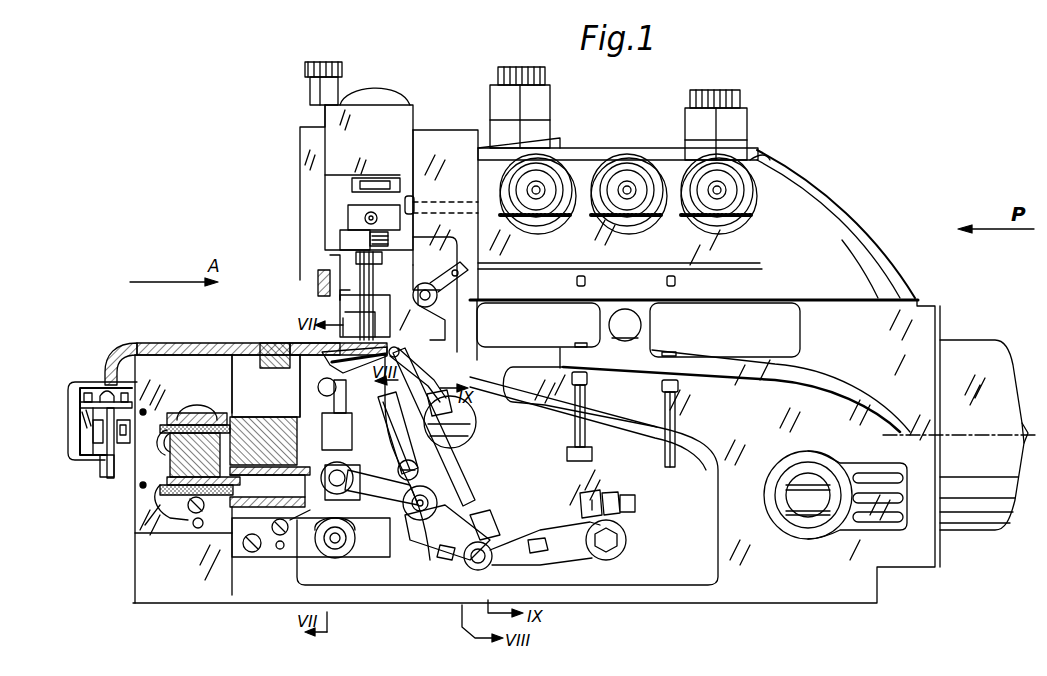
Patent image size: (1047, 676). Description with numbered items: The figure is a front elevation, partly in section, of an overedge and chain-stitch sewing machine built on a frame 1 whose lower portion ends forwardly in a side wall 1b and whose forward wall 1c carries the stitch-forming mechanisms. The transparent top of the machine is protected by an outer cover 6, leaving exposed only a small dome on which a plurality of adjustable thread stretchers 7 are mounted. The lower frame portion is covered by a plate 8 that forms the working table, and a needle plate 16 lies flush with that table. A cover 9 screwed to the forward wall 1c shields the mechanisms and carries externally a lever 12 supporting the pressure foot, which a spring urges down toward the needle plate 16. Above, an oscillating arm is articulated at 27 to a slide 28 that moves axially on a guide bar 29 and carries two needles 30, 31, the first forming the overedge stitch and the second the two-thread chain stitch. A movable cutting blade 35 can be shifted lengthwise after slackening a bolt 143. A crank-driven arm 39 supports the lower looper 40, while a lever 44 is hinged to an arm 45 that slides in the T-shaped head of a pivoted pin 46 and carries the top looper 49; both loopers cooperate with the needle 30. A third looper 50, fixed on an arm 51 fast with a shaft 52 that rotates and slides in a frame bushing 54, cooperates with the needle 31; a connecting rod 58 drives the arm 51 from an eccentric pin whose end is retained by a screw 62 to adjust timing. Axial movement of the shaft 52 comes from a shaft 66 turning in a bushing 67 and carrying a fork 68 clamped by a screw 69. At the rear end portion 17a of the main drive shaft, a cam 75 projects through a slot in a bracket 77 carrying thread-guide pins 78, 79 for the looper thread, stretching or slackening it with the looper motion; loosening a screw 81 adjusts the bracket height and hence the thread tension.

The frame 1 is at (937, 315).
The side wall 1b is at (143, 502).
The forward wall 1c is at (437, 142).
The outer cover 6 is at (853, 223).
The adjustable thread stretchers 7 is at (545, 180).
The plate 8 is at (172, 345).
The cover 9 is at (343, 140).
The lever 12 is at (320, 268).
The needle plate 16 is at (286, 345).
The rear end portion 17a is at (90, 435).
The articulation 27 is at (352, 222).
The slide 28 is at (385, 212).
The guide bar 29 is at (366, 195).
The needle 30 is at (390, 316).
The needle 31 is at (343, 310).
The cutting blade 35 is at (458, 268).
The arm 39 is at (393, 430).
The lower looper 40 is at (322, 385).
The lever 44 is at (578, 553).
The arm 45 is at (470, 507).
The pin 46 is at (472, 421).
The top looper 49 is at (404, 367).
The third looper 50 is at (340, 368).
The arm 51 is at (330, 415).
The shaft 52 is at (337, 545).
The bushing 54 is at (340, 540).
The connecting rod 58 is at (352, 505).
The screw 62 is at (457, 473).
The shaft 66 is at (305, 465).
The bushing 67 is at (305, 510).
The fork 68 is at (170, 467).
The screw 69 is at (187, 520).
The cam 75 is at (102, 480).
The bracket 77 is at (100, 397).
The pin 78 is at (83, 383).
The pin 79 is at (118, 353).
The screw 81 is at (123, 435).
The bolt 143 is at (432, 290).